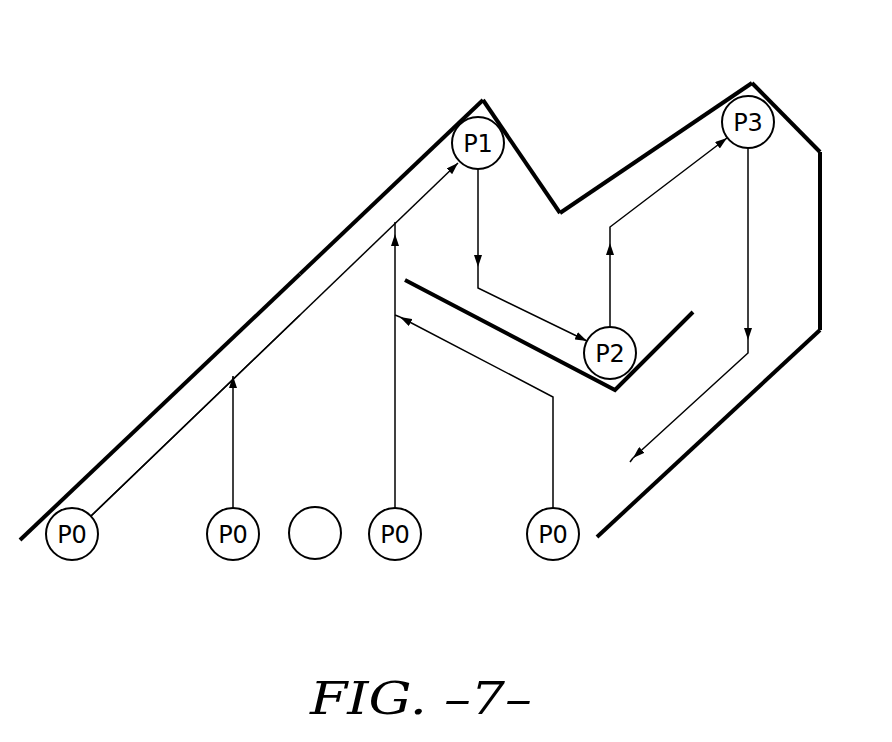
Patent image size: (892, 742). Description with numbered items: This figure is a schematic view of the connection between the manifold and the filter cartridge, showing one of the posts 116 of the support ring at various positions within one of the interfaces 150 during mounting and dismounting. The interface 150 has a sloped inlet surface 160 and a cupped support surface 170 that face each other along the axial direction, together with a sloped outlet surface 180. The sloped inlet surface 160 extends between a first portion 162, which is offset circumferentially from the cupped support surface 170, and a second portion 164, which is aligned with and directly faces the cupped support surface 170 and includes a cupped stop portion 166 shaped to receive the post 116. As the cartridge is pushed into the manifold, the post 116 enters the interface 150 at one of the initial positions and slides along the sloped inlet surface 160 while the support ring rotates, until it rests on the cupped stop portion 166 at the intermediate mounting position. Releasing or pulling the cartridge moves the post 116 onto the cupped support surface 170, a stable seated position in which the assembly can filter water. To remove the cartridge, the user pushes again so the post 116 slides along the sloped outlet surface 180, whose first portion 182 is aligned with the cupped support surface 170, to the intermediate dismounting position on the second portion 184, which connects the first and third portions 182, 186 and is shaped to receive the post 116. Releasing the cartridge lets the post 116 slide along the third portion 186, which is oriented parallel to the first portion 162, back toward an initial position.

The post 116 is at (307, 525).
The interface 150 is at (465, 508).
The sloped inlet surface 160 is at (303, 275).
The first portion of sloped inlet surface 162 is at (266, 304).
The second portion of sloped inlet surface 164 is at (418, 158).
The cupped stop portion 166 is at (483, 92).
The cupped support surface 170 is at (490, 323).
The sloped outlet surface 180 is at (796, 348).
The first portion of sloped outlet surface 182 is at (636, 161).
The second portion of sloped outlet surface 184 is at (752, 82).
The third portion of sloped outlet surface 186 is at (718, 427).